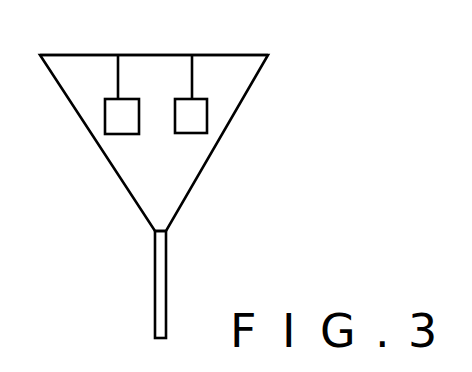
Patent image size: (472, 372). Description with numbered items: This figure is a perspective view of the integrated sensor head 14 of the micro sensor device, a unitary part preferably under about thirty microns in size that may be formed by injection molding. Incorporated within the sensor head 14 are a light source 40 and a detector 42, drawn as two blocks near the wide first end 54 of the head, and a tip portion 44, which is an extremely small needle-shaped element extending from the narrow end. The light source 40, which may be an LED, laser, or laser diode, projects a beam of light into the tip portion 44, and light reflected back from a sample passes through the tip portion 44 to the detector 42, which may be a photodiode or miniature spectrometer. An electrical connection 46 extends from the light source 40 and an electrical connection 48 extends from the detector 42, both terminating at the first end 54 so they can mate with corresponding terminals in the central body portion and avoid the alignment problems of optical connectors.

The integrated sensor head 14 is at (104, 200).
The light source 40 is at (105, 112).
The detector 42 is at (207, 113).
The tip portion 44 is at (166, 268).
The electrical connection 46 is at (118, 73).
The electrical connection 48 is at (192, 78).
The first end 54 is at (262, 55).